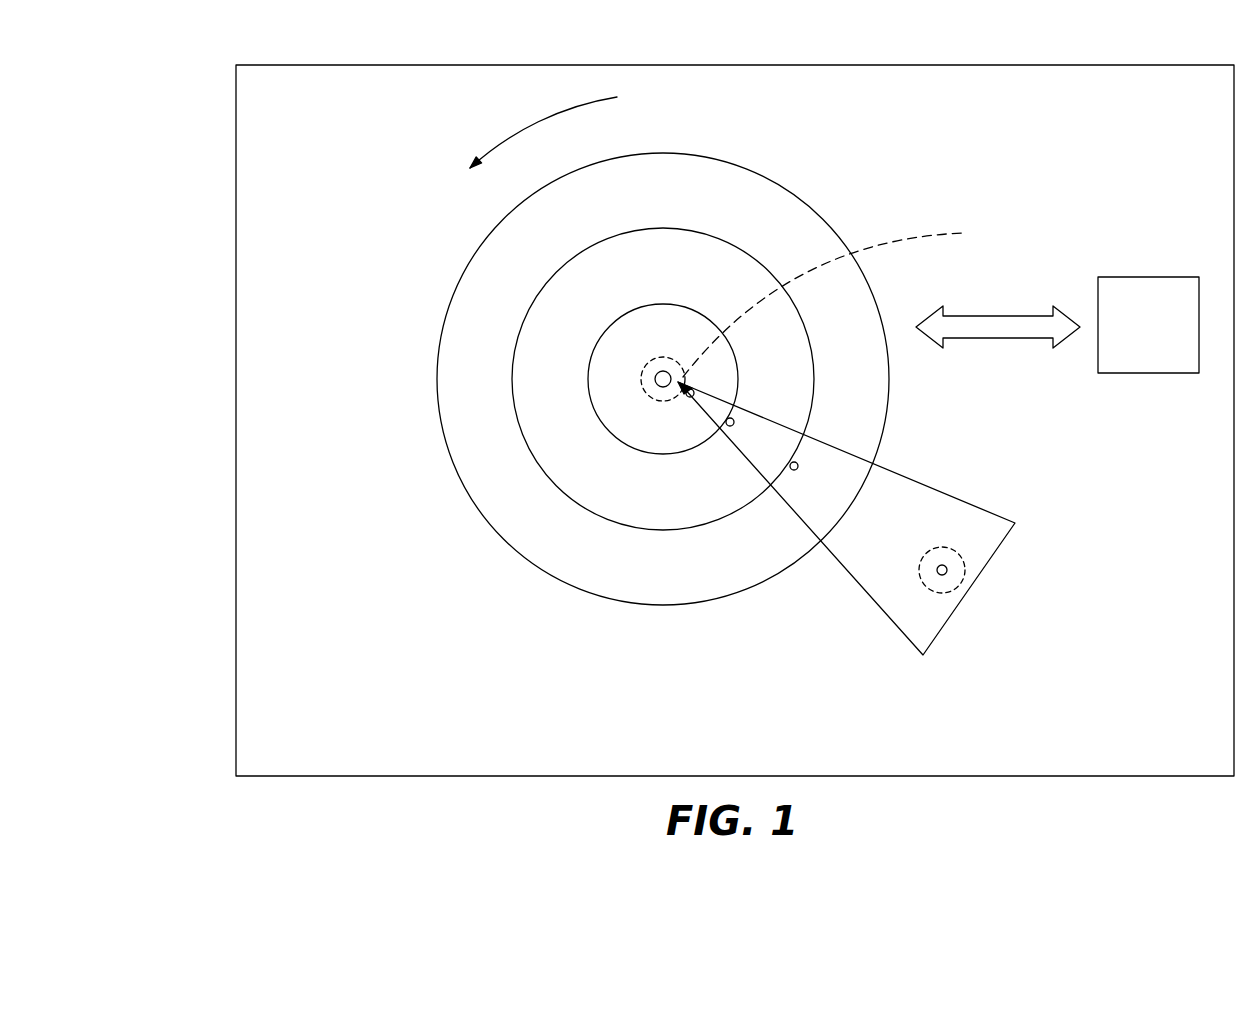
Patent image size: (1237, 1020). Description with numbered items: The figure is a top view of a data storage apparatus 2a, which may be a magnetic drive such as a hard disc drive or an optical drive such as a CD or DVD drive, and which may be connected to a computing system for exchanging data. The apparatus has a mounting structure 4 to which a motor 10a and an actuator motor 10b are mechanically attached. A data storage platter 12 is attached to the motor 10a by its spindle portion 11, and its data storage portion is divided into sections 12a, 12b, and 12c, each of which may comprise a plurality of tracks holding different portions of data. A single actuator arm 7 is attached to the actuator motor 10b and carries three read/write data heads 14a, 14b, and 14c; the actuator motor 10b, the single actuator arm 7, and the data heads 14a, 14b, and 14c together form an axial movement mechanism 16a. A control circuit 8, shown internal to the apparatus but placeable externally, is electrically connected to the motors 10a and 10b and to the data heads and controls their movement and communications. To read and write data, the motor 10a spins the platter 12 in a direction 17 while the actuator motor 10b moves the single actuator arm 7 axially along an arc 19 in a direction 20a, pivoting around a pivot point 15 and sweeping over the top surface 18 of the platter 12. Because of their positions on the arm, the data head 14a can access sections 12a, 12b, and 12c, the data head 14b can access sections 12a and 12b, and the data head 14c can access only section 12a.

The data storage apparatus 2a is at (203, 119).
The mounting structure 4 is at (236, 379).
The single actuator arm 7 is at (957, 498).
The control circuit 8 is at (1141, 364).
The motor 10a is at (643, 364).
The actuator motor 10b is at (962, 556).
The spindle portion 11 is at (655, 379).
The data storage platter 12 is at (798, 198).
The section 12a is at (643, 205).
The section 12b is at (643, 279).
The section 12c is at (643, 340).
The R/W data head 14a is at (686, 402).
The R/W data head 14b is at (730, 427).
The R/W data head 14c is at (793, 471).
The pivot point 15 is at (950, 569).
The axial movement mechanism 16a is at (935, 428).
The direction 17 is at (512, 135).
The top surface 18 is at (468, 379).
The arc 19 is at (797, 275).
The direction 20a is at (957, 226).